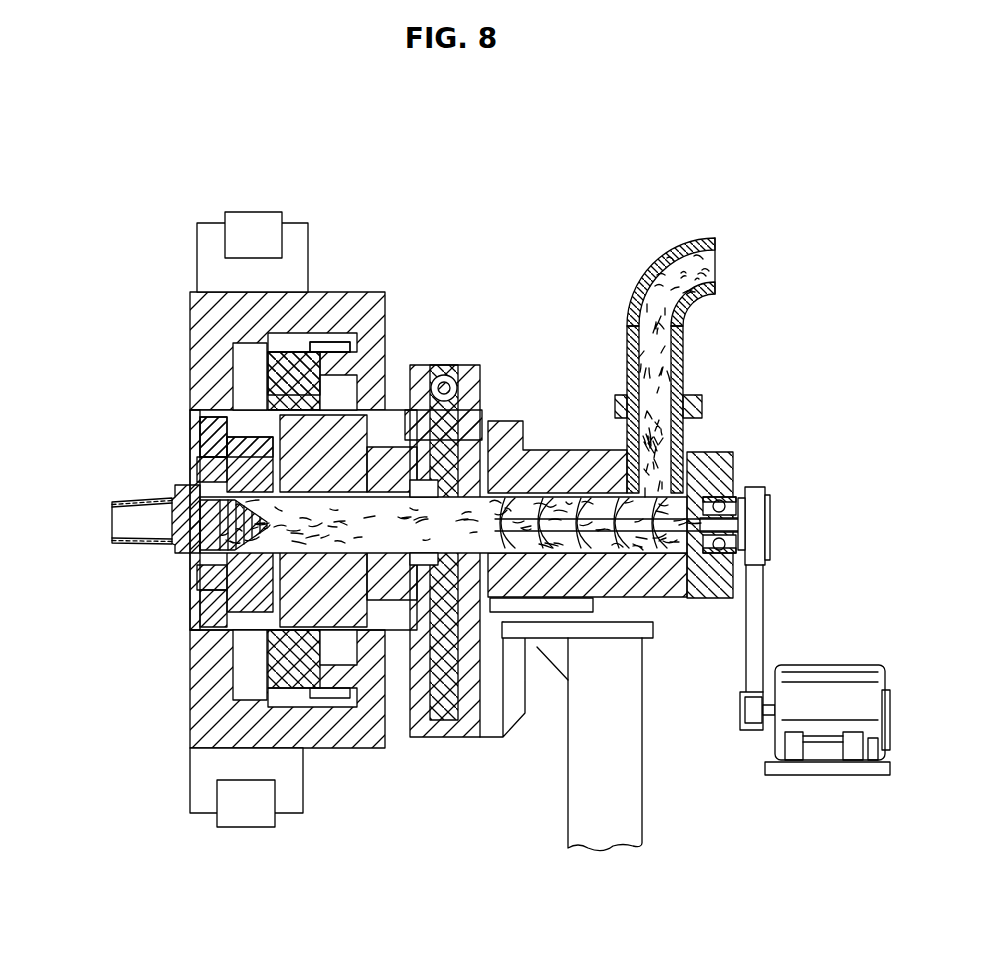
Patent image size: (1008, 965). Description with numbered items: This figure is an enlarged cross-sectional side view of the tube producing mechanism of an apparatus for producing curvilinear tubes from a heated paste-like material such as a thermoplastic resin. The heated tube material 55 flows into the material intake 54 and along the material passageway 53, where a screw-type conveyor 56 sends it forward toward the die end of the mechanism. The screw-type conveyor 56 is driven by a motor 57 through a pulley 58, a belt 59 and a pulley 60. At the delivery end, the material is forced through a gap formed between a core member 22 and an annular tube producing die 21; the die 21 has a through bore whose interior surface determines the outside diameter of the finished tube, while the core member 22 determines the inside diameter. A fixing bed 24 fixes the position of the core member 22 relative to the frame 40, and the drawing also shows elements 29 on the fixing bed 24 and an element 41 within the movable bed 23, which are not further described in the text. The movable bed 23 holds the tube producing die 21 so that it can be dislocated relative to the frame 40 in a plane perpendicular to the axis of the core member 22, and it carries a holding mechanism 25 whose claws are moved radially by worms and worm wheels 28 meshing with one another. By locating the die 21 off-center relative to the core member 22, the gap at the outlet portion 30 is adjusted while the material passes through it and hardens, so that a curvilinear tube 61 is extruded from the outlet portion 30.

The tube producing die 21 is at (170, 499).
The core member 22 is at (115, 523).
The movable bed 23 is at (207, 342).
The fixing bed 24 is at (300, 241).
The holding mechanism 25 is at (252, 393).
The worm wheel 28 is at (328, 355).
The heater 29 is at (256, 228).
The outlet portion 30 is at (175, 535).
The frame 40 is at (260, 403).
The insert 41 is at (282, 388).
The material passageway 53 is at (523, 452).
The material intake 54 is at (697, 232).
The tube material 55 is at (683, 352).
The screw-type conveyor 56 is at (648, 584).
The motor 57 is at (843, 690).
The pulley 58 is at (738, 718).
The belt 59 is at (763, 615).
The pulley 60 is at (770, 525).
The curvilinear tube 61 is at (127, 506).